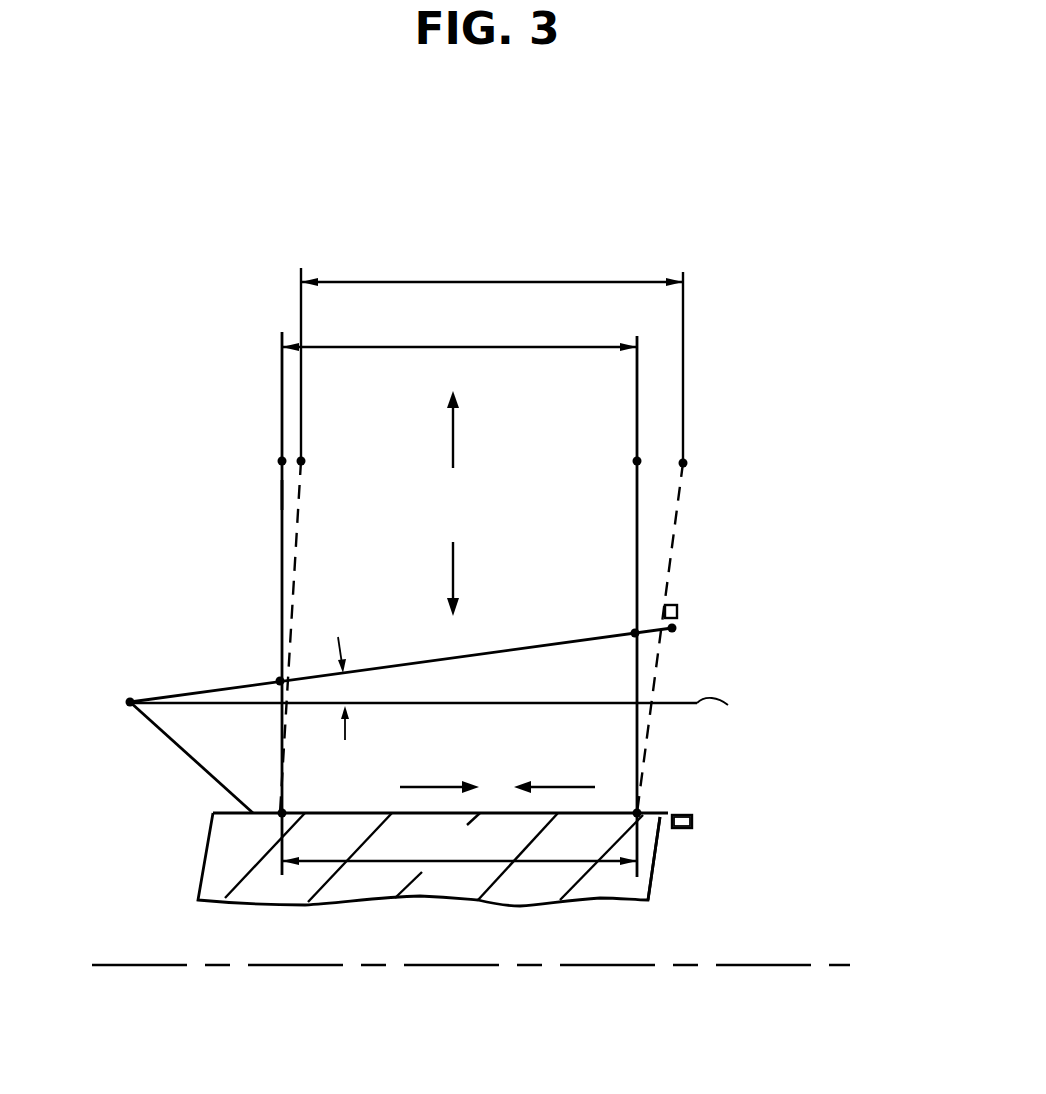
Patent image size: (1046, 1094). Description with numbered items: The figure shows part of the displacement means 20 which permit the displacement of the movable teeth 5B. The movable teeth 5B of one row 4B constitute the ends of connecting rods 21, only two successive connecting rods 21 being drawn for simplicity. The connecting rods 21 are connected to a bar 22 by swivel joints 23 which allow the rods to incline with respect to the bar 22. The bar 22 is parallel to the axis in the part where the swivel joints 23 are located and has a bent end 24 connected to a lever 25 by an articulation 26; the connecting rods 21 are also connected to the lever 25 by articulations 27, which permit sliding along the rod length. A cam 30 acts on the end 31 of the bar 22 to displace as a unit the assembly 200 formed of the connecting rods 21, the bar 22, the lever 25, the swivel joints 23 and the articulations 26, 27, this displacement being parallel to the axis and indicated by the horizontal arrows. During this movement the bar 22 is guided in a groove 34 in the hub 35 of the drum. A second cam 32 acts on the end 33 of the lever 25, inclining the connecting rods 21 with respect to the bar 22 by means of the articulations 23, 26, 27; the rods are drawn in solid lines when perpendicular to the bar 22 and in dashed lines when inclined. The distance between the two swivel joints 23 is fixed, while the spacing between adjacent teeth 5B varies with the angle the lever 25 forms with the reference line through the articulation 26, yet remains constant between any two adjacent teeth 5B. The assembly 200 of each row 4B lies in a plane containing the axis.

The displacement means 20 is at (208, 279).
The assembly 200 is at (736, 235).
The connecting rods 21 is at (281, 571).
The bar 22 is at (528, 817).
The swivel joints 23 is at (283, 809).
The bent end 24 is at (190, 758).
The lever 25 is at (406, 656).
The articulation 26 is at (130, 702).
The articulations 27 is at (280, 681).
The cam 30 is at (685, 830).
The end of the bar 31 is at (692, 821).
The cam 32 is at (677, 607).
The end of the lever 33 is at (676, 631).
The groove 34 is at (668, 813).
The hub 35 is at (657, 884).
The row 4B is at (281, 498).
The movable teeth 5B is at (281, 461).